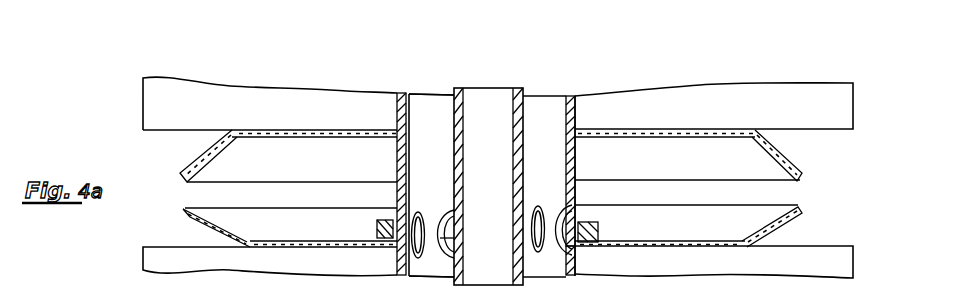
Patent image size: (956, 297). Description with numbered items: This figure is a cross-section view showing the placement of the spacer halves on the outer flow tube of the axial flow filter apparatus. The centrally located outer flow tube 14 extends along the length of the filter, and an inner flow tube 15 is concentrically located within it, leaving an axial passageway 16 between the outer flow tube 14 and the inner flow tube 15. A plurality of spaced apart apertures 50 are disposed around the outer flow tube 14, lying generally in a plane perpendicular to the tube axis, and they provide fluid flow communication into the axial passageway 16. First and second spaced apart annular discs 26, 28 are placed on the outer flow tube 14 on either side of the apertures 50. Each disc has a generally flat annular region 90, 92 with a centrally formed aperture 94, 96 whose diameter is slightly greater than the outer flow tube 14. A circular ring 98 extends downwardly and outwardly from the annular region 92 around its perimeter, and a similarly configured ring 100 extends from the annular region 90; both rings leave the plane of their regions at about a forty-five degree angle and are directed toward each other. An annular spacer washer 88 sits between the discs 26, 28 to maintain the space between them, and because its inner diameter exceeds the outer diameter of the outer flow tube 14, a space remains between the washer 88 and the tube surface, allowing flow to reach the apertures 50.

The outer flow tube 14 is at (398, 150).
The inner flow tube 15 is at (463, 130).
The axial passageway 16 is at (422, 113).
The first annular disc 26 is at (258, 250).
The second annular disc 28 is at (262, 128).
The apertures 50 is at (447, 210).
The annular spacer washer 88 is at (594, 223).
The flat annular region 90 is at (725, 247).
The flat annular region 92 is at (658, 130).
The aperture 94 is at (578, 248).
The aperture 96 is at (580, 123).
The circular ring 98 is at (783, 153).
The ring 100 is at (793, 222).